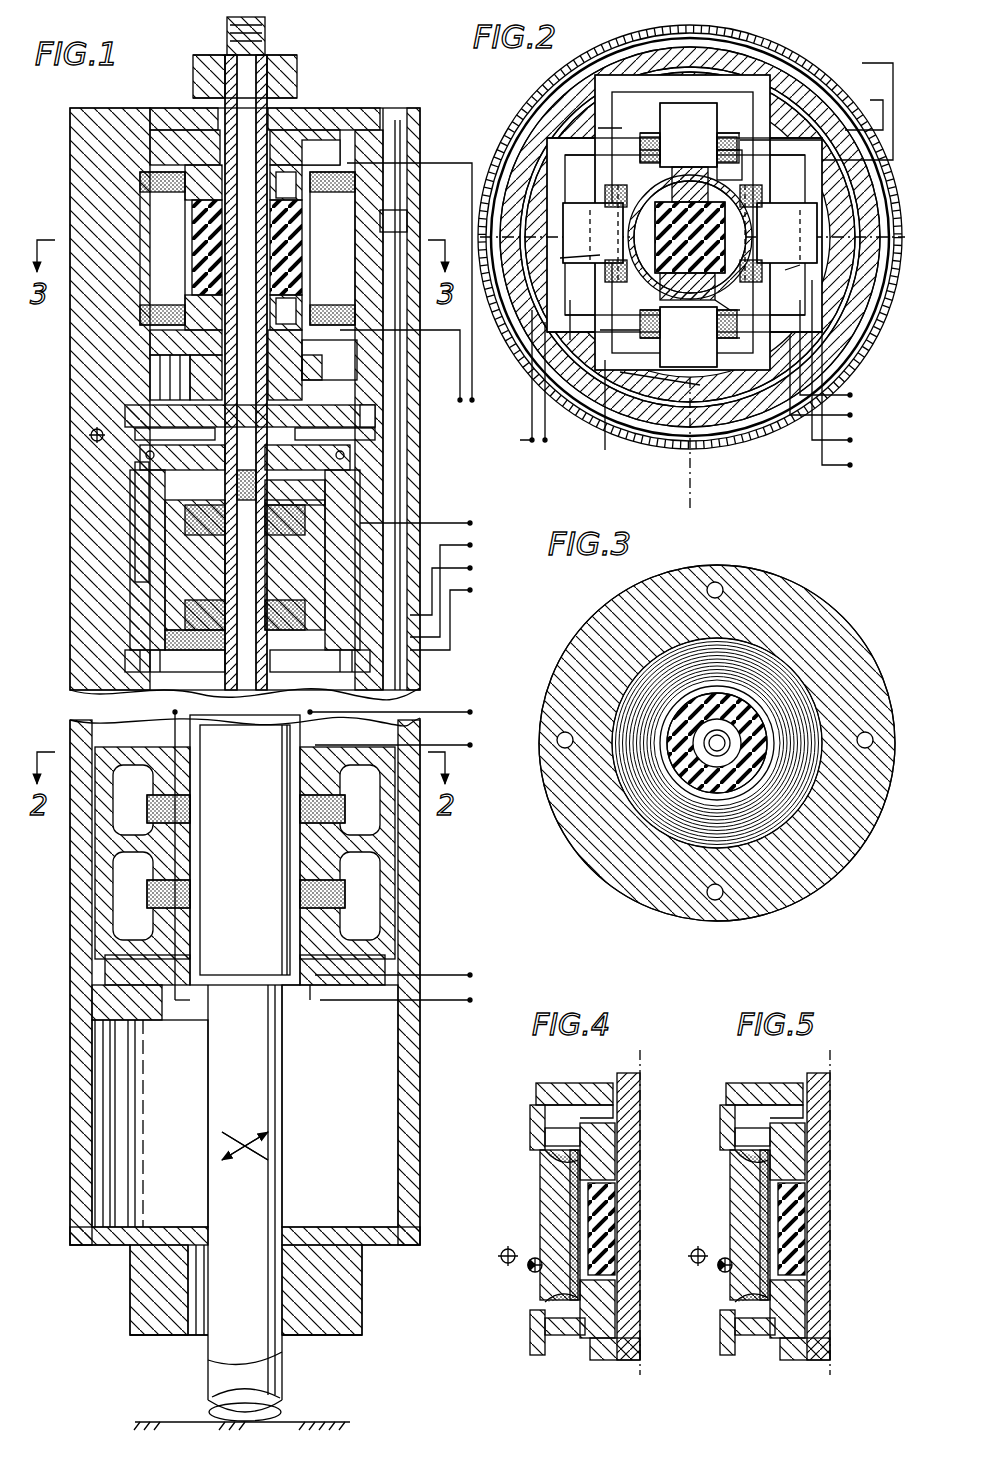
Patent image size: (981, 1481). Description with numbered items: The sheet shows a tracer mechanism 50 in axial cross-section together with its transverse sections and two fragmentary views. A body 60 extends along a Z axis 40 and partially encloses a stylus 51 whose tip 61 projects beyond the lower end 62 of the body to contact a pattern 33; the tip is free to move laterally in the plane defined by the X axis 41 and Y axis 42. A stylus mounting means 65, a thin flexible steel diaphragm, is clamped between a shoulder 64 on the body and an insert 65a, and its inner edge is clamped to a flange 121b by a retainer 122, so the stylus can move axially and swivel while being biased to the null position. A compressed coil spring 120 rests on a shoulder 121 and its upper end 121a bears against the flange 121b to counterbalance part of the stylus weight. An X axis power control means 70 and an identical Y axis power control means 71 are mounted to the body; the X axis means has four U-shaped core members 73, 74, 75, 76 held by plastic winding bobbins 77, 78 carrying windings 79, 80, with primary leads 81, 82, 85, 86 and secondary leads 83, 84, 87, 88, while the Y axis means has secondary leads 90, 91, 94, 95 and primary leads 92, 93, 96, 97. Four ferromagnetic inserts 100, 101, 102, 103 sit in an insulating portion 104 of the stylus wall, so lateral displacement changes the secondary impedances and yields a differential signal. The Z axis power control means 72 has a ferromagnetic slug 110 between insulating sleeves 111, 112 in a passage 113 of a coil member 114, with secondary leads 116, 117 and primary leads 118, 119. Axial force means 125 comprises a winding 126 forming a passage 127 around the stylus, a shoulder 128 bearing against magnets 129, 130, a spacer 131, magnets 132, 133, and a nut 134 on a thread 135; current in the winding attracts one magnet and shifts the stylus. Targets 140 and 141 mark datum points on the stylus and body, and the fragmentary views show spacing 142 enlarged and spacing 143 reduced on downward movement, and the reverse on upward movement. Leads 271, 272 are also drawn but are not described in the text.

In FIG. 1, the pattern 33 is at (170, 1422).
In FIG. 1, the Z axis 40 is at (270, 52).
In FIG. 2, the X axis 41 is at (692, 493).
In FIG. 2, the Y axis 42 is at (906, 240).
In FIG. 1, the tracer mechanism 50 is at (396, 96).
In FIG. 2, the tracer mechanism 50 is at (828, 52).
In FIG. 1, the stylus 51 is at (208, 1392).
In FIG. 2, the stylus 51 is at (690, 237).
In FIG. 3, the stylus 51 is at (690, 720).
In FIG. 4, the stylus 51 is at (640, 1068).
In FIG. 5, the stylus 51 is at (823, 1212).
In FIG. 1, the body 60 is at (137, 106).
In FIG. 2, the body 60 is at (628, 32).
In FIG. 3, the body 60 is at (592, 868).
In FIG. 4, the body 60 is at (587, 1082).
In FIG. 5, the body 60 is at (761, 1203).
In FIG. 1, the tip 61 is at (282, 1422).
In FIG. 1, the lower end 62 is at (338, 1336).
In FIG. 1, the shoulder 64 is at (370, 430).
In FIG. 1, the stylus mounting means 65 is at (345, 456).
In FIG. 1, the insert 65a is at (375, 412).
In FIG. 1, the X axis power control means 70 is at (395, 870).
In FIG. 2, the X axis power control means 70 is at (520, 280).
In FIG. 2, the Y axis power control means 71 is at (617, 412).
In FIG. 1, the Z axis power control means 72 is at (205, 610).
In FIG. 1, the U-shaped core member 73 is at (185, 838).
In FIG. 1, the U-shaped core member 74 is at (150, 905).
In FIG. 1, the U-shaped core member 75 is at (385, 815).
In FIG. 1, the U-shaped core member 76 is at (372, 896).
In FIG. 1, the winding bobbin 77 is at (165, 932).
In FIG. 2, the winding bobbin 77 is at (650, 290).
In FIG. 1, the winding bobbin 78 is at (360, 908).
In FIG. 2, the winding bobbin 78 is at (822, 300).
In FIG. 1, the winding 79 is at (148, 812).
In FIG. 2, the winding 79 is at (600, 198).
In FIG. 1, the winding 80 is at (345, 822).
In FIG. 2, the winding 80 is at (790, 270).
In FIG. 1, the primary lead 81 is at (407, 746).
In FIG. 2, the primary lead 81 is at (720, 383).
In FIG. 2, the primary lead 82 is at (623, 343).
In FIG. 1, the secondary lead 83 is at (407, 974).
In FIG. 2, the secondary lead 83 is at (728, 109).
In FIG. 2, the secondary lead 84 is at (618, 112).
In FIG. 1, the primary lead 85 is at (336, 852).
In FIG. 2, the primary lead 85 is at (839, 364).
In FIG. 2, the primary lead 86 is at (687, 370).
In FIG. 2, the secondary lead 87 is at (752, 118).
In FIG. 1, the secondary lead 88 is at (410, 1002).
In FIG. 2, the secondary lead 88 is at (858, 138).
In FIG. 2, the secondary lead 90 is at (544, 272).
In FIG. 2, the secondary lead 91 is at (652, 160).
In FIG. 2, the primary lead 92 is at (758, 122).
In FIG. 2, the primary lead 93 is at (720, 165).
In FIG. 2, the secondary lead 94 is at (576, 329).
In FIG. 2, the secondary lead 95 is at (556, 382).
In FIG. 2, the primary lead 96 is at (836, 380).
In FIG. 2, the primary lead 97 is at (715, 302).
In FIG. 1, the insert 100 is at (180, 1002).
In FIG. 2, the insert 100 is at (590, 258).
In FIG. 1, the insert 101 is at (245, 850).
In FIG. 2, the insert 101 is at (670, 310).
In FIG. 1, the insert 102 is at (305, 1002).
In FIG. 2, the insert 102 is at (778, 234).
In FIG. 2, the insert 103 is at (684, 150).
In FIG. 1, the insulating portion 104 is at (208, 740).
In FIG. 1, the ferromagnetic slug 110 is at (256, 565).
In FIG. 1, the insulating sleeve 111 is at (175, 671).
In FIG. 1, the insulating sleeve 112 is at (258, 497).
In FIG. 1, the passage 113 is at (320, 671).
In FIG. 1, the coil member 114 is at (195, 565).
In FIG. 1, the secondary lead 116 is at (460, 586).
In FIG. 1, the secondary lead 117 is at (460, 615).
In FIG. 1, the primary lead 118 is at (435, 523).
In FIG. 1, the primary lead 119 is at (460, 586).
In FIG. 1, the coil spring 120 is at (348, 497).
In FIG. 1, the shoulder 121 is at (140, 550).
In FIG. 1, the upper end 121a is at (140, 470).
In FIG. 1, the flange 121b is at (146, 455).
In FIG. 1, the retainer 122 is at (185, 396).
In FIG. 1, the axial force means 125 is at (180, 245).
In FIG. 3, the axial force means 125 is at (780, 650).
In FIG. 1, the winding 126 is at (332, 248).
In FIG. 3, the winding 126 is at (760, 835).
In FIG. 4, the winding 126 is at (556, 1208).
In FIG. 5, the winding 126 is at (753, 1230).
In FIG. 1, the passage 127 is at (304, 232).
In FIG. 1, the shoulder 128 is at (292, 132).
In FIG. 1, the magnet 129 is at (315, 140).
In FIG. 4, the magnet 129 is at (545, 1136).
In FIG. 5, the magnet 129 is at (737, 1125).
In FIG. 1, the magnet 130 is at (168, 185).
In FIG. 1, the spacer 131 is at (190, 262).
In FIG. 1, the magnet 132 is at (182, 305).
In FIG. 1, the magnet 133 is at (306, 360).
In FIG. 4, the magnet 133 is at (547, 1335).
In FIG. 5, the magnet 133 is at (731, 1342).
In FIG. 1, the nut 134 is at (150, 362).
In FIG. 1, the thread 135 is at (329, 373).
In FIG. 1, the target 140 is at (162, 468).
In FIG. 1, the target 141 is at (90, 436).
In FIG. 4, the spacing 142 is at (552, 1310).
In FIG. 5, the spacing 142 is at (729, 1309).
In FIG. 4, the spacing 143 is at (550, 1158).
In FIG. 5, the spacing 143 is at (730, 1166).
In FIG. 1, the lead 271 is at (401, 366).
In FIG. 1, the lead 272 is at (410, 269).